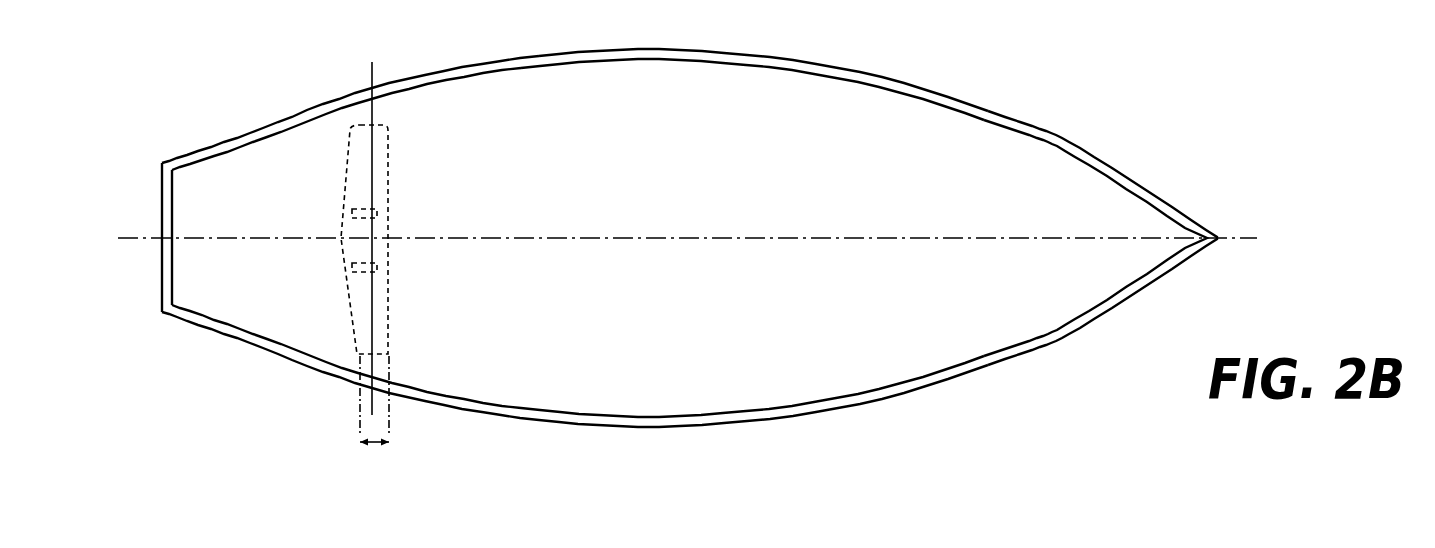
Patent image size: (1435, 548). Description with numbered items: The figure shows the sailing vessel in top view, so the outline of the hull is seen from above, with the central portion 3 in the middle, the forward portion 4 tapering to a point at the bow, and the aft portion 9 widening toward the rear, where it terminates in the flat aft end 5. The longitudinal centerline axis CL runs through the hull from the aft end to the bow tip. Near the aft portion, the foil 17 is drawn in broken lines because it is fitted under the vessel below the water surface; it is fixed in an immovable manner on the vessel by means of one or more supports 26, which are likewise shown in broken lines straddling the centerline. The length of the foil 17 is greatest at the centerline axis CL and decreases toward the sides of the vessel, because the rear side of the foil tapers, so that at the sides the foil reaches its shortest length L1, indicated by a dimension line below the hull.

The central portion 3 is at (668, 77).
The forward portion 4 is at (1108, 157).
The aft end 5 is at (162, 291).
The aft portion 9 is at (215, 143).
The foil 17 is at (348, 308).
The support 26 is at (350, 268).
The longitudinal centerline axis CL is at (608, 238).
The shortest length of the foil L1 is at (376, 417).